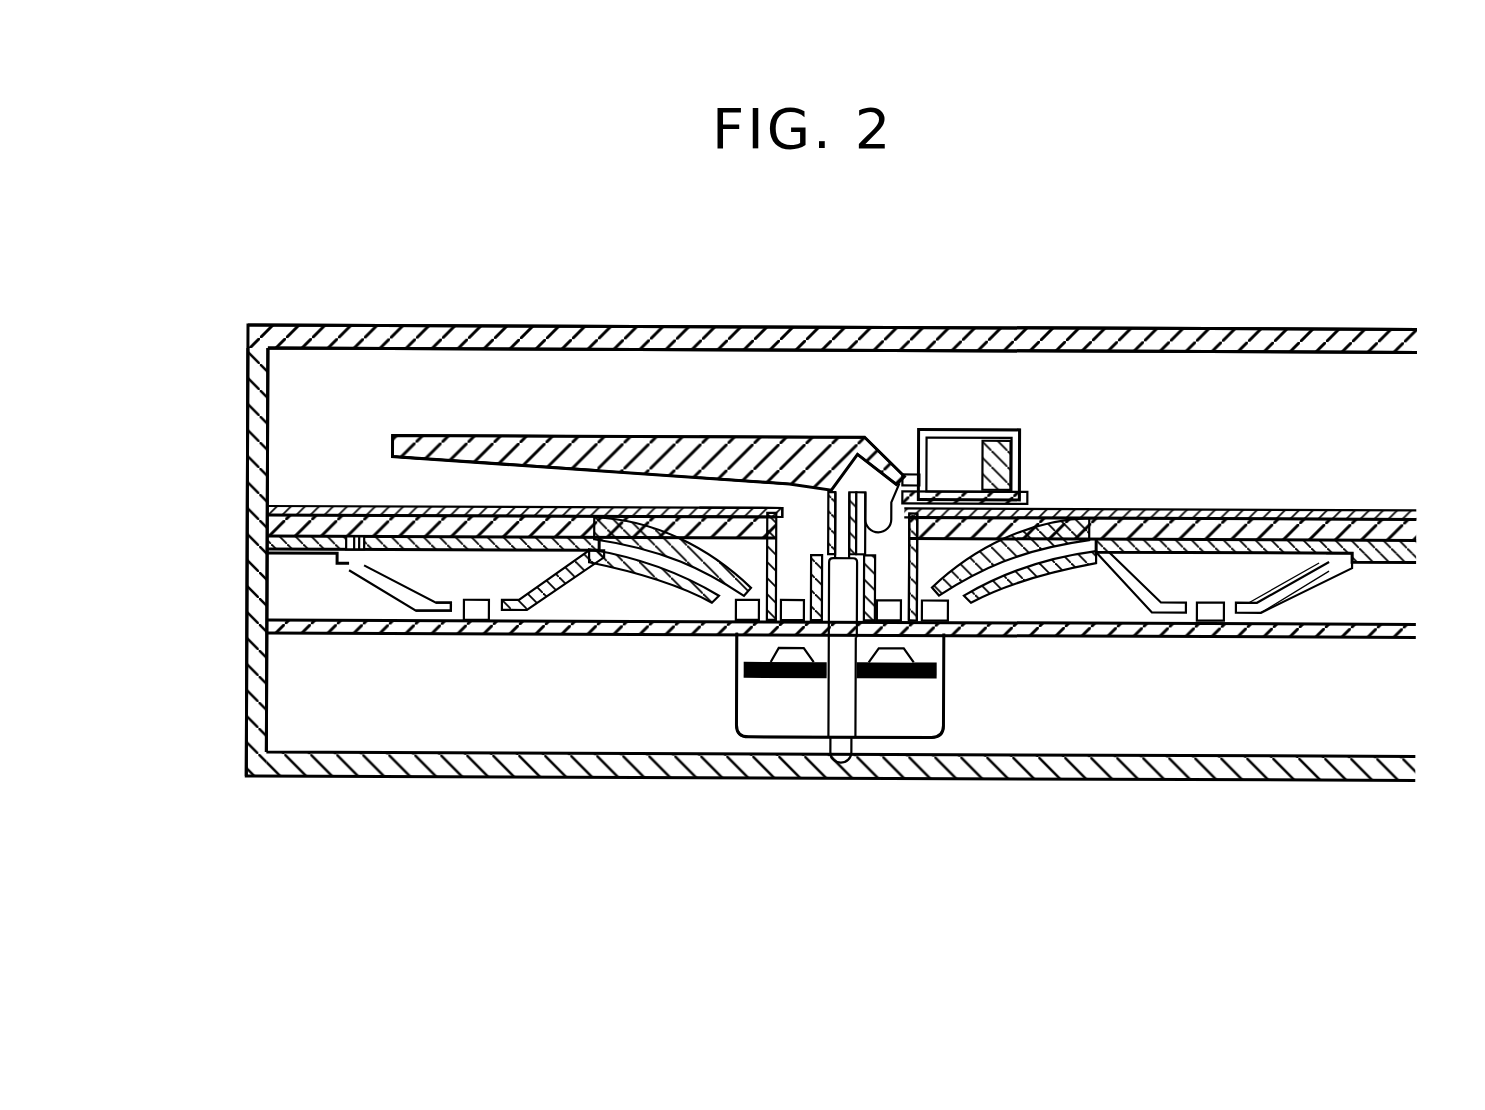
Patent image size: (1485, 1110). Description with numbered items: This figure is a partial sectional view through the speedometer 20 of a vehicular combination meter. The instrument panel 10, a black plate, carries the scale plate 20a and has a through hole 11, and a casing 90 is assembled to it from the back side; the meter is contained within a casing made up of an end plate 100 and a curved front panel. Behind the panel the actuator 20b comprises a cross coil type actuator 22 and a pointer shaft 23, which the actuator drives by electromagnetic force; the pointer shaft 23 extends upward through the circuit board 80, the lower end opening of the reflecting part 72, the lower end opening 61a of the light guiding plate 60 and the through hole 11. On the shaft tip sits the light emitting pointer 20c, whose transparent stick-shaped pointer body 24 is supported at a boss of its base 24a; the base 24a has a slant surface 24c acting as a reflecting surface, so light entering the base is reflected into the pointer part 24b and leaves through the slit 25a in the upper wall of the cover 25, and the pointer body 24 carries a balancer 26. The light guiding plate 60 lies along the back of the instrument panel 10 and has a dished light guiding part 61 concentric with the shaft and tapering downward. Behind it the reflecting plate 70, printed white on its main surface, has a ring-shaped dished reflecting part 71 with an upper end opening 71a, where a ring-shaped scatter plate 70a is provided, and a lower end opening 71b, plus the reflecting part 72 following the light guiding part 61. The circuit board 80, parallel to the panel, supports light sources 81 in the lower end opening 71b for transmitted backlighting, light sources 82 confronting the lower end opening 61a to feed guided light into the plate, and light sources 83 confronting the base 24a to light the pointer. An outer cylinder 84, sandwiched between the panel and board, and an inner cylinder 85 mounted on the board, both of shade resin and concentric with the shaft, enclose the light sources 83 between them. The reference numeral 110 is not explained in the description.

The instrument panel 10 is at (1338, 498).
The through hole 11 is at (787, 510).
The speedometer 20 is at (960, 410).
The scale plate 20a is at (1040, 497).
The actuator 20b is at (956, 712).
The light emitting pointer 20c is at (630, 418).
The cross coil type actuator 22 is at (883, 710).
The pointer shaft 23 is at (878, 472).
The pointer body 24 is at (702, 450).
The base 24a is at (780, 475).
The pointer part 24b is at (590, 450).
The slant surface 24c is at (858, 478).
The cover 25 is at (822, 457).
The slit 25a is at (480, 433).
The balancer 26 is at (995, 440).
The light guiding plate 60 is at (1268, 525).
The light guiding part 61 is at (655, 585).
The lower end opening 61a is at (730, 592).
The reflecting plate 70 is at (1390, 567).
The scatter plate 70a is at (350, 570).
The reflecting part 71 is at (361, 568).
The upper end opening 71a is at (363, 534).
The lower end opening 71b is at (448, 612).
The reflecting part 72 is at (578, 600).
The circuit board 80 is at (1394, 650).
The light sources 81 is at (478, 612).
The light sources 82 is at (750, 620).
The light sources 83 is at (790, 615).
The outer cylinder 84 is at (933, 592).
The inner cylinder 85 is at (808, 597).
The casing 90 is at (245, 712).
The end plate 100 is at (250, 405).
The top wall 110 is at (381, 325).